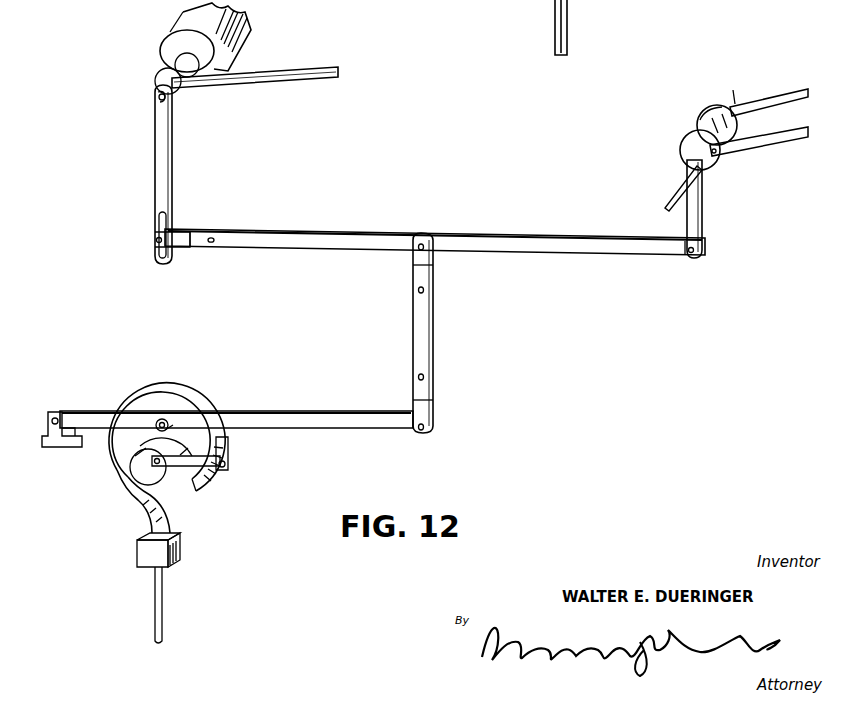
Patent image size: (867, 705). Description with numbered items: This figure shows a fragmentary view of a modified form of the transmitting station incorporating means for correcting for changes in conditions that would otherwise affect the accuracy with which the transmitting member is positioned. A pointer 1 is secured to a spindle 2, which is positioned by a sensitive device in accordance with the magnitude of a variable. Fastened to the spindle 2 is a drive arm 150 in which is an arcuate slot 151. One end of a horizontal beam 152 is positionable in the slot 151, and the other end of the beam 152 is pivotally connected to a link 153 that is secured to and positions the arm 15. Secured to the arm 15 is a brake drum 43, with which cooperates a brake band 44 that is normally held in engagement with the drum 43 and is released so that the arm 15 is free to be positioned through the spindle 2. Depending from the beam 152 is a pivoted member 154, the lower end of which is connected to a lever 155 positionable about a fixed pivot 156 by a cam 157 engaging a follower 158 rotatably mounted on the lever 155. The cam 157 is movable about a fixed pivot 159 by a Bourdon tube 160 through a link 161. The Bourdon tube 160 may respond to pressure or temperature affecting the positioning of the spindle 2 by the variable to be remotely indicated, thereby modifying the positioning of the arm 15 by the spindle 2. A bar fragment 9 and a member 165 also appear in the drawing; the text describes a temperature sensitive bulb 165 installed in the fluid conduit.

The pointer 1 is at (312, 68).
The spindle 2 is at (160, 101).
The arm 9 is at (728, 100).
The arm 15 is at (792, 141).
The brake drum 43 is at (722, 166).
The brake band 44 is at (680, 128).
The drive arm 150 is at (173, 147).
The arcuate slot 151 is at (152, 221).
The horizontal beam 152 is at (508, 235).
The link 153 is at (703, 198).
The pivoted member 154 is at (436, 326).
The lever 155 is at (310, 412).
The fixed pivot 156 is at (55, 419).
The cam 157 is at (163, 482).
The follower 158 is at (166, 419).
The fixed pivot 159 is at (122, 488).
The Bourdon tube 160 is at (141, 388).
The link 161 is at (220, 470).
The temperature sensitive bulb 165 is at (569, 6).